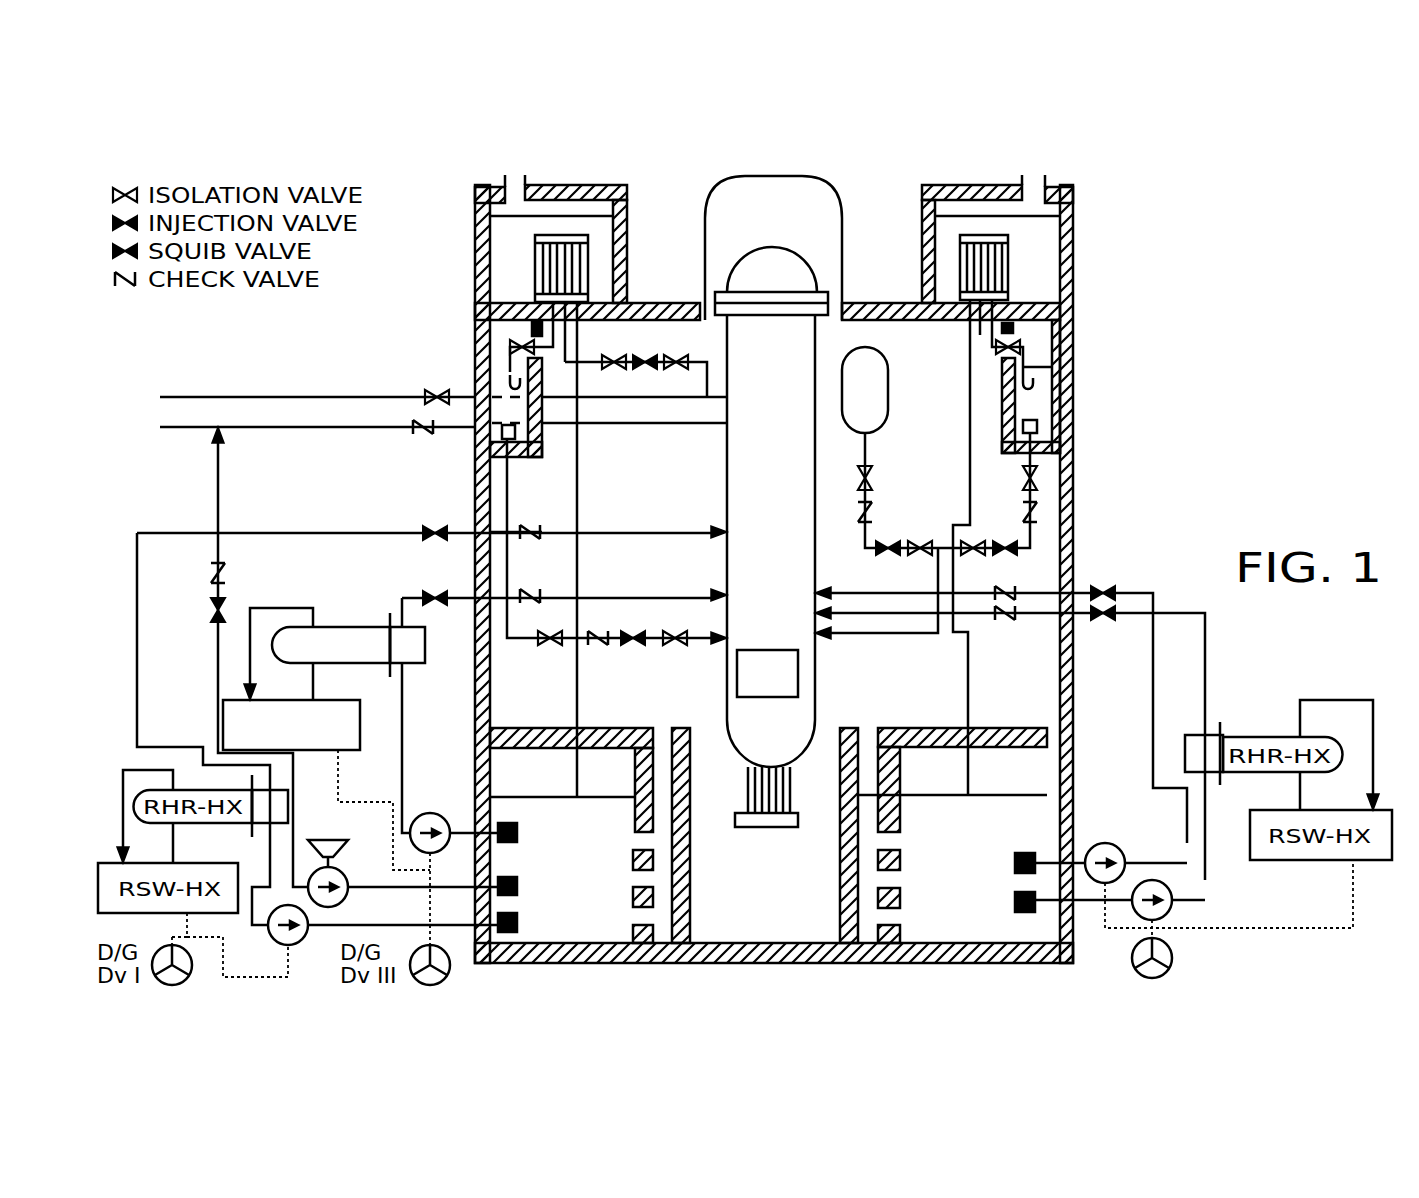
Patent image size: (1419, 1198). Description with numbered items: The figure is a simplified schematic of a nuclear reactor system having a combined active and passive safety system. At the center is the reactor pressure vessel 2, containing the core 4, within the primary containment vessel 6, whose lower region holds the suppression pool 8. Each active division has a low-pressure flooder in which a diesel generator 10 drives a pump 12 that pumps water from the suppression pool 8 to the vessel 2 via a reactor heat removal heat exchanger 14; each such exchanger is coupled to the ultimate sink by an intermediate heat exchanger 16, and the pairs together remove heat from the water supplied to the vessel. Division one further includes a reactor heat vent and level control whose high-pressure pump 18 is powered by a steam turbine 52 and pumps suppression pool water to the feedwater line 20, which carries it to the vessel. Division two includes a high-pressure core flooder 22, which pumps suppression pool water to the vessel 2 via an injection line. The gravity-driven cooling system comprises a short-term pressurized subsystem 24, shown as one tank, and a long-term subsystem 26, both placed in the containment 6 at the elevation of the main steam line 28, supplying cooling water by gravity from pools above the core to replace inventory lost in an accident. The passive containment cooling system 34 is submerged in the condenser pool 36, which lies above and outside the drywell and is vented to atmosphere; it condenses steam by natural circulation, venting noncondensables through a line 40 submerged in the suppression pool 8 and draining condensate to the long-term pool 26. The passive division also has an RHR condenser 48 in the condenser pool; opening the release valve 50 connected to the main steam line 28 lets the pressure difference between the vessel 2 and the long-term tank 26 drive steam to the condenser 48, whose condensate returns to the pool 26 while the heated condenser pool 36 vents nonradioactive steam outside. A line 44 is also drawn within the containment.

The reactor pressure vessel 2 is at (715, 453).
The reactor core 4 is at (812, 672).
The primary containment vessel 6 is at (1075, 512).
The suppression pool 8 is at (1078, 810).
The diesel generator 10 is at (1133, 958).
The pump 12 is at (424, 812).
The reactor heat removal heat exchanger 14 is at (333, 622).
The intermediate heat exchanger 16 is at (325, 700).
The high-pressure pump 18 is at (350, 895).
The feedwater line 20 is at (290, 428).
The high-pressure core flooder 22 is at (1122, 852).
The short-term pressurized subsystem 24 is at (890, 383).
The long-term subsystem 26 is at (1080, 393).
The main steam line 28 is at (328, 396).
The passive containment cooling system 34 is at (1010, 258).
The condenser pool 36 is at (1082, 277).
The line 40 is at (970, 670).
The drain line 44 is at (580, 500).
The RHR condenser 48 is at (590, 270).
The release valve 50 is at (650, 360).
The steam turbine 52 is at (348, 852).